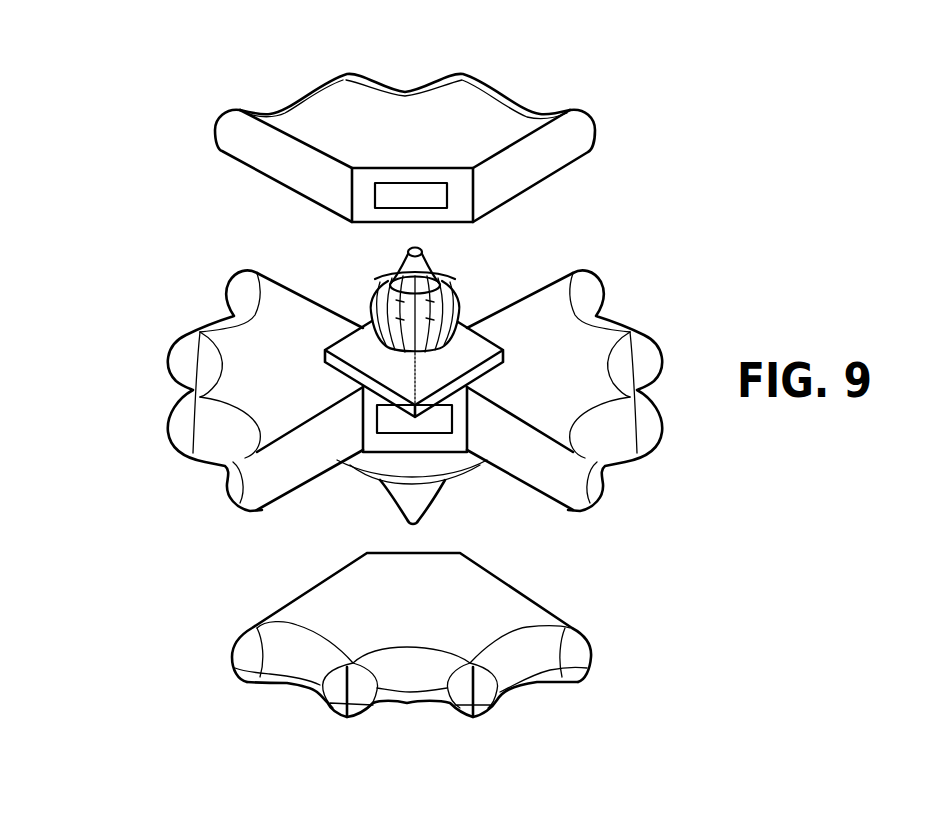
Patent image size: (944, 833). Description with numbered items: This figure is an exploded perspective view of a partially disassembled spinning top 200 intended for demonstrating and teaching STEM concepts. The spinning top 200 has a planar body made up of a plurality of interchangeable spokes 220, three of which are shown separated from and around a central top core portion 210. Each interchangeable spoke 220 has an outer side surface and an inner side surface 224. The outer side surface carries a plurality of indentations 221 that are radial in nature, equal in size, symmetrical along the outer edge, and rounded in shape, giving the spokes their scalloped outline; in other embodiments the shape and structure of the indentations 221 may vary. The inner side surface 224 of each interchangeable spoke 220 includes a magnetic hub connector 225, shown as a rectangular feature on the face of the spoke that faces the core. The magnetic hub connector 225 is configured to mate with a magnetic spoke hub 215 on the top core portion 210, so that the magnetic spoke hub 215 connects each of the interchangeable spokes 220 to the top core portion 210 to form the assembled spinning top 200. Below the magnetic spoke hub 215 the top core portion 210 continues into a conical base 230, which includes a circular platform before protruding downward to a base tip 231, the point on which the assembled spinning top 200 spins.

The spinning top 200 is at (138, 102).
The top core portion 210 is at (465, 273).
The magnetic spoke hub 215 is at (410, 423).
The interchangeable spokes 220 is at (490, 80).
The indentations 221 is at (614, 313).
The inner side surface 224 is at (467, 175).
The magnetic hub connector 225 is at (407, 197).
The conical base 230 is at (442, 492).
The base tip 231 is at (420, 530).